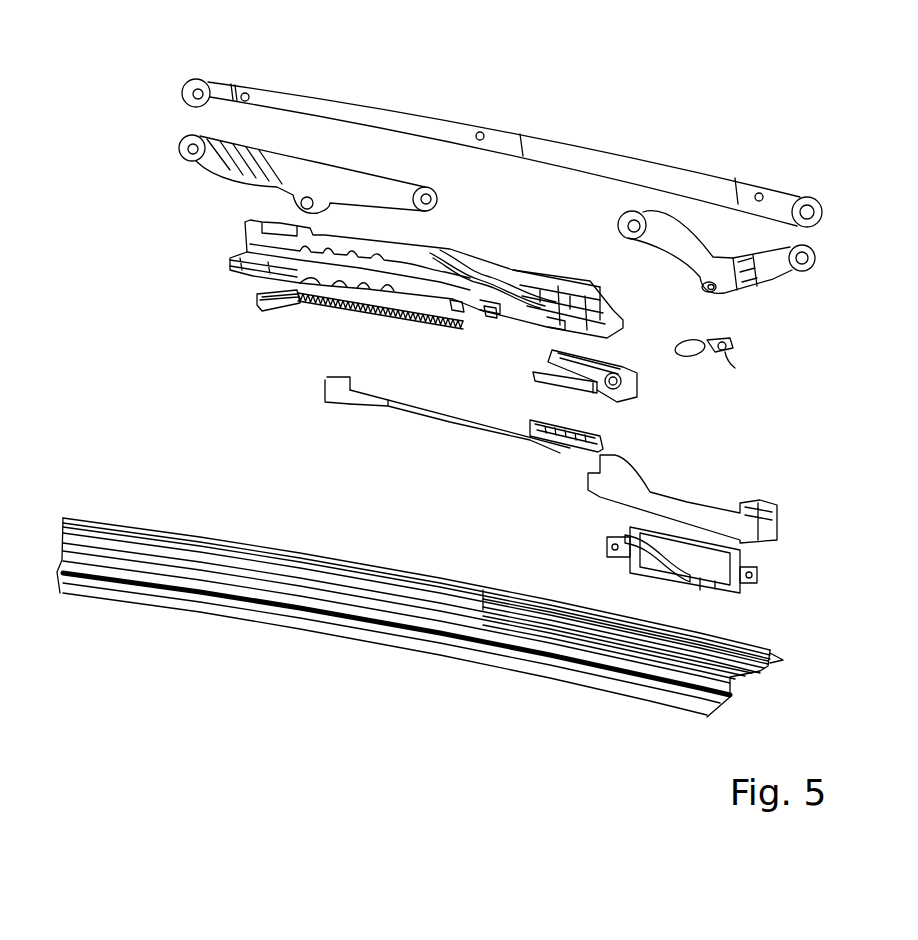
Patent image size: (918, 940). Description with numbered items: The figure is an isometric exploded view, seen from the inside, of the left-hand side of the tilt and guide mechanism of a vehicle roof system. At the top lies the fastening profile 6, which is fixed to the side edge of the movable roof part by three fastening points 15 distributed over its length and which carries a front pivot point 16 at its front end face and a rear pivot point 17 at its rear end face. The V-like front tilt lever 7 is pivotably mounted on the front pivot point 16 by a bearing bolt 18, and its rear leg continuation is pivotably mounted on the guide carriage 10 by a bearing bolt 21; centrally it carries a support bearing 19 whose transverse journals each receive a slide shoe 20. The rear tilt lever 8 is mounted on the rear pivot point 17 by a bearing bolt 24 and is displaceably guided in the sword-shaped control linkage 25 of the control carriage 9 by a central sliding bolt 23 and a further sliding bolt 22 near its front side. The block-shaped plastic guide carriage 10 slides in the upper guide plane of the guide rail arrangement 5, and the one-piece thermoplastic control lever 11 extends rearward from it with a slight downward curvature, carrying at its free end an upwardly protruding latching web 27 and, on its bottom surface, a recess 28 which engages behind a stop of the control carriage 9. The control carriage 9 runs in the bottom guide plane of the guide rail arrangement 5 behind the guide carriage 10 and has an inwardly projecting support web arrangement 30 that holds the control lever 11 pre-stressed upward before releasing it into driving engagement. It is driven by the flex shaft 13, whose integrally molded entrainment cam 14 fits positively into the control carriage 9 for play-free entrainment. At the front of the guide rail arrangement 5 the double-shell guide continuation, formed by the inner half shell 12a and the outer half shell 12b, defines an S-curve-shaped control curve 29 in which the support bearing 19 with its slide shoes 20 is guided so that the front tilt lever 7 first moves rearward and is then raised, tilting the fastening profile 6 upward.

The guide rail arrangement 5 is at (356, 554).
The fastening profile 6 is at (380, 119).
The front tilt lever 7 is at (675, 240).
The rear tilt lever 8 is at (368, 186).
The control carriage 9 is at (490, 273).
The guide carriage 10 is at (623, 401).
The control lever 11 is at (483, 427).
The inner half shell 12a is at (660, 486).
The outer half shell 12b is at (635, 566).
The flex shaft 13 is at (393, 322).
The entrainment cam 14 is at (256, 308).
The fastening points 15 is at (247, 93).
The front pivot point 16 is at (199, 80).
The rear pivot point 17 is at (809, 203).
The bearing bolt 18 is at (795, 272).
The support bearing 19 is at (688, 298).
The slide shoe 20 is at (733, 368).
The bearing bolt 21 is at (618, 228).
The sliding bolt 22 is at (437, 199).
The sliding bolt 23 is at (300, 203).
The bearing bolt 24 is at (186, 153).
The control linkage 25 is at (440, 263).
The latching web 27 is at (347, 373).
The recess 28 is at (403, 410).
The control curve 29 is at (683, 574).
The support web arrangement 30 is at (488, 311).